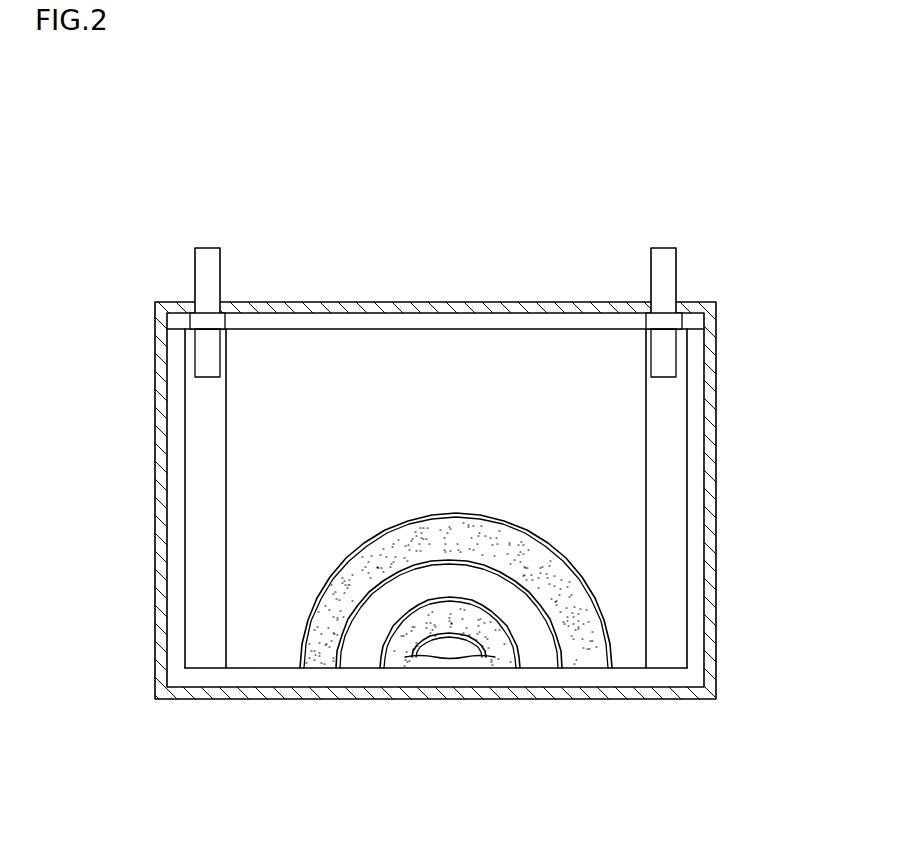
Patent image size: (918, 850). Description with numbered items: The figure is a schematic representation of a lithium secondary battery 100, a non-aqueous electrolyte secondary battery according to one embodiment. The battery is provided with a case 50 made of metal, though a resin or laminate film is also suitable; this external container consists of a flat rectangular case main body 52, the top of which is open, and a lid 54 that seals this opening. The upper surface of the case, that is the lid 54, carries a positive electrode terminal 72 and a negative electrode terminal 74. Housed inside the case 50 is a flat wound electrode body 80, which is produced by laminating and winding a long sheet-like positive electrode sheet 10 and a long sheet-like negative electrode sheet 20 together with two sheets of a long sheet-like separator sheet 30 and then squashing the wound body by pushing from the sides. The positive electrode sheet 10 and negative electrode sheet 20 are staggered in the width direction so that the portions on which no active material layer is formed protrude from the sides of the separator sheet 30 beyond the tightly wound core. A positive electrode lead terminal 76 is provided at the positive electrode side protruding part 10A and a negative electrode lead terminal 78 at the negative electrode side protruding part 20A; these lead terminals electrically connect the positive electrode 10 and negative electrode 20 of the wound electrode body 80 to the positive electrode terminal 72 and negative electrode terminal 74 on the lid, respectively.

The lithium secondary battery 100 is at (710, 177).
The case 50 is at (484, 458).
The case main body 52 is at (717, 645).
The lid 54 is at (318, 302).
The positive electrode terminal 72 is at (205, 256).
The negative electrode terminal 74 is at (661, 252).
The positive electrode lead terminal 76 is at (203, 370).
The negative electrode lead terminal 78 is at (665, 367).
The positive electrode sheet 10 is at (435, 559).
The positive electrode side protruding part 10A is at (203, 560).
The negative electrode side protruding part 20A is at (673, 580).
The negative electrode sheet 20 is at (363, 650).
The separator sheet 30 is at (322, 648).
The wound electrode body 80 is at (622, 668).